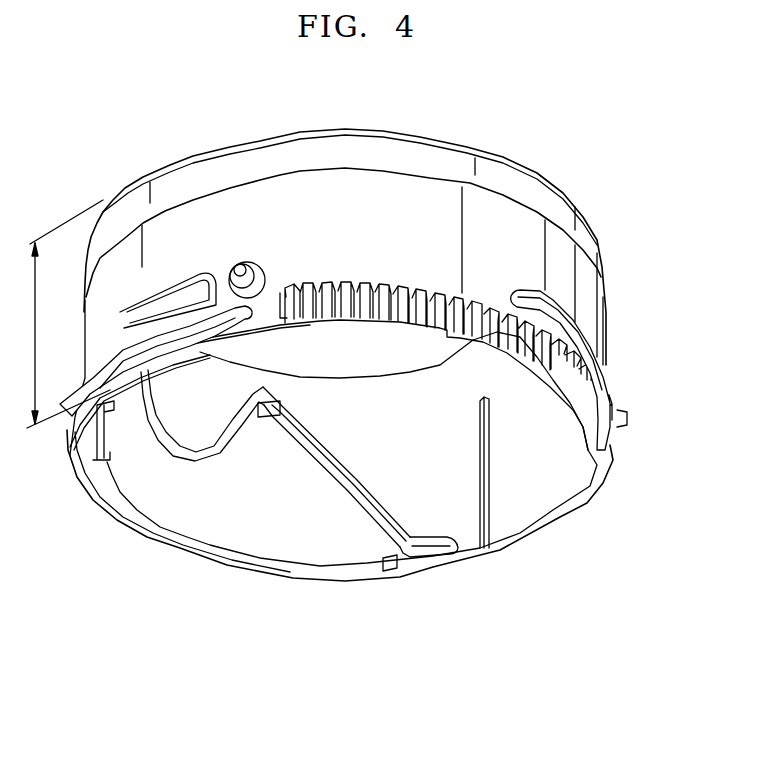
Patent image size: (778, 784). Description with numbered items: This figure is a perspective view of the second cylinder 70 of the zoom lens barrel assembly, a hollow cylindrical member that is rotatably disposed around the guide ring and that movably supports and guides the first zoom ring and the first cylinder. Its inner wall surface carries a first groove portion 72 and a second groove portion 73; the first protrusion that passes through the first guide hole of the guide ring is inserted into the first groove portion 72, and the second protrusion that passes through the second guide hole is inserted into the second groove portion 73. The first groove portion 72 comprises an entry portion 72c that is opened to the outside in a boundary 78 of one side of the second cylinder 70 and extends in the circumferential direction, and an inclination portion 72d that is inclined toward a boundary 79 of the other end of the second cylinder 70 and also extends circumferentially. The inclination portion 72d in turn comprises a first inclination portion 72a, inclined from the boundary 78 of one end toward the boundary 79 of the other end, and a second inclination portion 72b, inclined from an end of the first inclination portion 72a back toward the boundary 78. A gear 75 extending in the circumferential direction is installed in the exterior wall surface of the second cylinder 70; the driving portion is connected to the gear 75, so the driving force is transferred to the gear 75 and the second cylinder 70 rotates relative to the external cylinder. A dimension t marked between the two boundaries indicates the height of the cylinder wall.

The second cylinder 70 is at (620, 118).
The first groove portion 72 is at (299, 537).
The first inclination portion 72a is at (347, 481).
The second inclination portion 72b is at (216, 458).
The entry portion 72c is at (420, 601).
The inclination portion 72d is at (275, 517).
The second groove portion 73 is at (485, 548).
The gear 75 is at (518, 290).
The boundary 78 is at (558, 516).
The boundary 79 is at (381, 130).
The thickness t is at (64, 314).